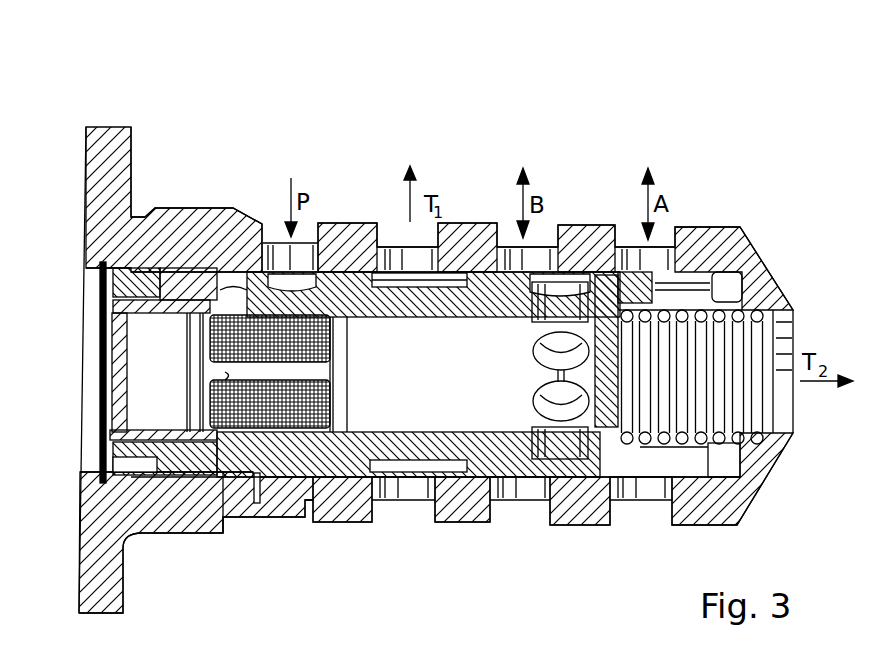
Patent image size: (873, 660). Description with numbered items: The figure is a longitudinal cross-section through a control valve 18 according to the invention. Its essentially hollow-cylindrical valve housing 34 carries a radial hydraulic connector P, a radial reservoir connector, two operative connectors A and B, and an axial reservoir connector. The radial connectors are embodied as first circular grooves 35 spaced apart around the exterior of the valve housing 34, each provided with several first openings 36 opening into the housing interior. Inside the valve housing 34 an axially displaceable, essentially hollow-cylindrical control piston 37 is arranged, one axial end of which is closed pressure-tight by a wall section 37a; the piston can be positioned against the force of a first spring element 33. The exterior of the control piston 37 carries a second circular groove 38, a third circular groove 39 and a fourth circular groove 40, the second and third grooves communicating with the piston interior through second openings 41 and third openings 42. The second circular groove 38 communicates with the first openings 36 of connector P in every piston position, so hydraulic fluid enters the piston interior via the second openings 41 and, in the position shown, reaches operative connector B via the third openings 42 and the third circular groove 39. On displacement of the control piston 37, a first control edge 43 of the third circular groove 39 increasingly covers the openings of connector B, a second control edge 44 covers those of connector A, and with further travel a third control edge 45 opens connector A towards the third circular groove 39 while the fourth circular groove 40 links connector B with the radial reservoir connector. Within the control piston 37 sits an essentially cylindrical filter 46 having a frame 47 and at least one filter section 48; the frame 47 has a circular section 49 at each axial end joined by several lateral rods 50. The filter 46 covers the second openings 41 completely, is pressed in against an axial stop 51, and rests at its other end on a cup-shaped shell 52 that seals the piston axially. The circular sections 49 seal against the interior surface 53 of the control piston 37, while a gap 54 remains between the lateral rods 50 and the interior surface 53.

The control valve 18 is at (110, 108).
The first spring element 33 is at (773, 310).
The valve housing 34 is at (750, 257).
The first circular grooves 35 is at (380, 223).
The first openings 36 is at (368, 500).
The control piston 37 is at (177, 280).
The wall section 37a is at (640, 482).
The second circular groove 38 is at (220, 300).
The third circular groove 39 is at (544, 277).
The fourth circular groove 40 is at (462, 236).
The second openings 41 is at (265, 503).
The third openings 42 is at (547, 443).
The first control edge 43 is at (546, 270).
The second control edge 44 is at (673, 277).
The third control edge 45 is at (577, 283).
The filter 46 is at (172, 382).
The frame 47 is at (195, 400).
The filter section 48 is at (215, 333).
The circular section 49 is at (213, 421).
The lateral rods 50 is at (223, 520).
The axial stop 51 is at (307, 490).
The cup-shaped shell 52 is at (127, 348).
The interior surface 53 is at (350, 318).
The gap 54 is at (198, 297).